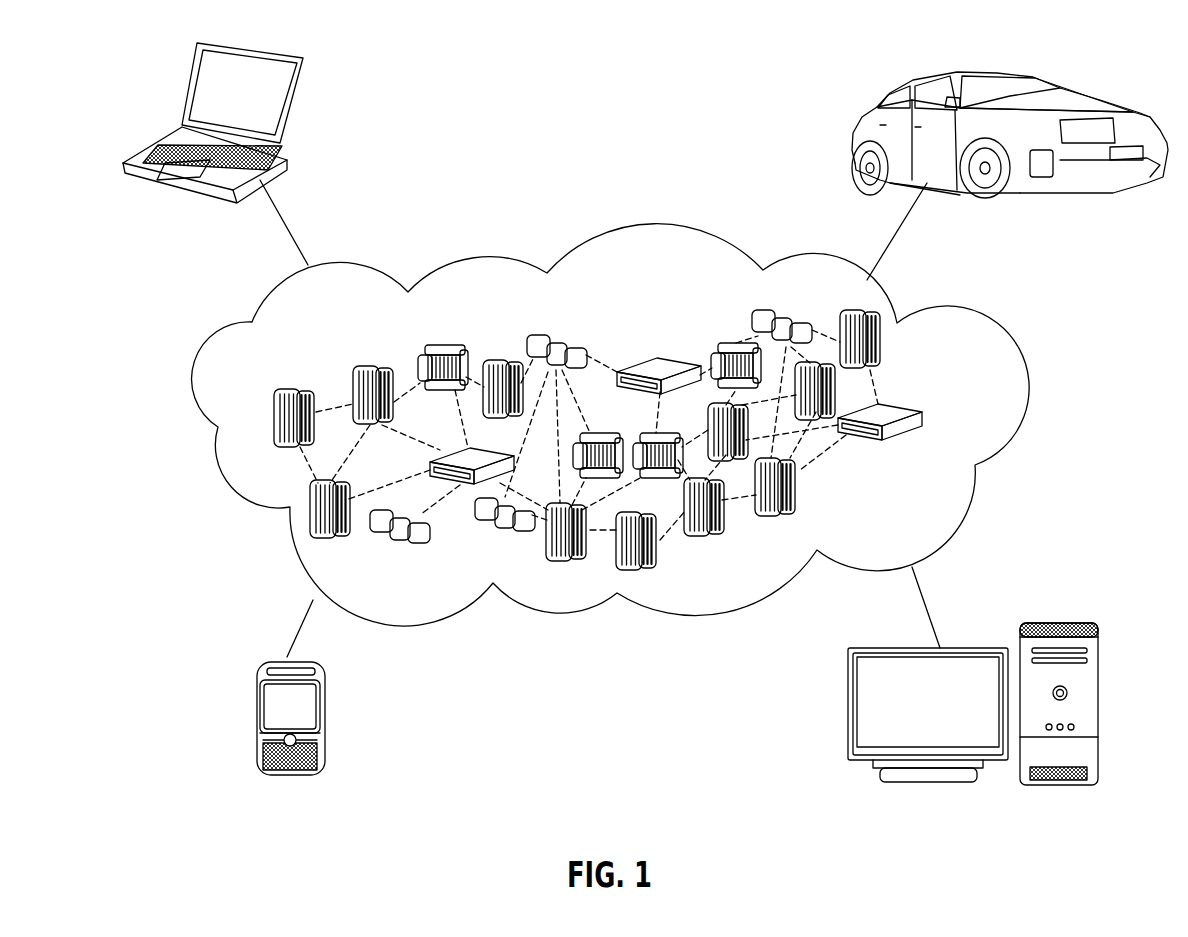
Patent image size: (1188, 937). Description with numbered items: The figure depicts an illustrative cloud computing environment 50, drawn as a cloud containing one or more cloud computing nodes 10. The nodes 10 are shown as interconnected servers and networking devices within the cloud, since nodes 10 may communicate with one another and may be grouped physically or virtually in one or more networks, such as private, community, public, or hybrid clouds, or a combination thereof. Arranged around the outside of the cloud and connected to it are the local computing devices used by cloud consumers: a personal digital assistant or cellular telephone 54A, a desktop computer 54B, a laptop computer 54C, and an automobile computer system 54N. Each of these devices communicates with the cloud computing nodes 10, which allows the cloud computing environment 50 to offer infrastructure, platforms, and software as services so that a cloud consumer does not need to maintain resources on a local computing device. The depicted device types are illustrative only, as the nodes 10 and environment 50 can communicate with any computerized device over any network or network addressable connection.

The cloud computing nodes 10 is at (972, 420).
The cloud computing environment 50 is at (983, 337).
The personal digital assistant or cellular telephone 54A is at (258, 727).
The desktop computer 54B is at (1060, 623).
The laptop computer 54C is at (297, 110).
The automobile computer system 54N is at (858, 120).